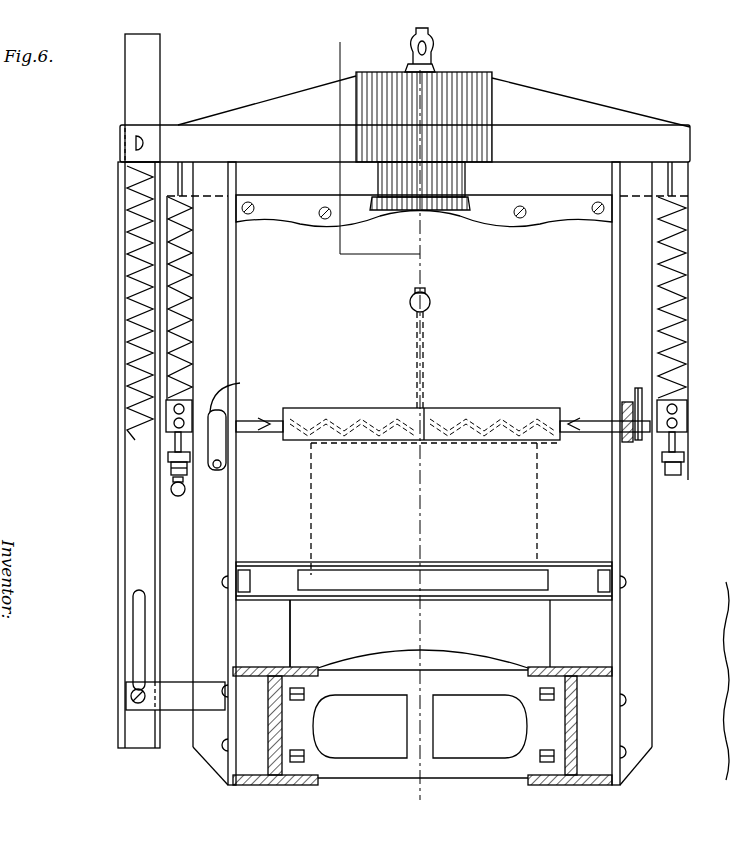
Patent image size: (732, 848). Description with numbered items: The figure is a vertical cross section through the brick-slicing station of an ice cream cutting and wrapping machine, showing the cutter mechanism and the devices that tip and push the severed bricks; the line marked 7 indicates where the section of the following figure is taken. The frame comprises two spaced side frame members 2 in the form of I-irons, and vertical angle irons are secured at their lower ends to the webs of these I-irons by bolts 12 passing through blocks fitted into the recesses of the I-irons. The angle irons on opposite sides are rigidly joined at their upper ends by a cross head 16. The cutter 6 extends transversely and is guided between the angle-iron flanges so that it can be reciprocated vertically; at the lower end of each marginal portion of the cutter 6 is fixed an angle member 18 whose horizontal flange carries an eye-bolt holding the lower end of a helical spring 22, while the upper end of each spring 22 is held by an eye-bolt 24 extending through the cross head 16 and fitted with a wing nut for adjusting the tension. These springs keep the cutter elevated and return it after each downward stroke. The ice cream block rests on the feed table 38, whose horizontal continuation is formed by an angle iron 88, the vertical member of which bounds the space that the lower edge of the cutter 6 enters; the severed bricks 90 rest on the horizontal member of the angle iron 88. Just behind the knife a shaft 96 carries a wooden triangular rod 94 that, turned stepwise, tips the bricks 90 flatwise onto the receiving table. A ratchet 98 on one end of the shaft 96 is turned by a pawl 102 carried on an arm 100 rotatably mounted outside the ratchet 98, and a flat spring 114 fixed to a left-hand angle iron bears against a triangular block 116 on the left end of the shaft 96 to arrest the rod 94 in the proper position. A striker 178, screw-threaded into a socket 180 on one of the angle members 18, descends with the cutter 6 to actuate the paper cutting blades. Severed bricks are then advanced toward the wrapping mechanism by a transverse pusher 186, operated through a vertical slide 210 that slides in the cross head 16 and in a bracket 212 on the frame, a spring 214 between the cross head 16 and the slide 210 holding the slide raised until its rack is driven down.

The side frame member 2 is at (253, 667).
The cutter 6 is at (484, 236).
The section line 7- 7 is at (340, 42).
The bolt 12 is at (220, 746).
The cross head 16 is at (562, 137).
The angle member 18 is at (171, 467).
The helical spring 22 is at (187, 300).
The eye-bolt 24 is at (181, 188).
The feed table 38 is at (300, 615).
The angle iron 88 is at (363, 562).
The severed brick 90 is at (524, 531).
The triangular rod 94 is at (490, 410).
The shaft 96 is at (583, 433).
The ratchet 98 is at (627, 445).
The arm 100 is at (640, 392).
The pawl 102 is at (630, 405).
The flat spring 114 is at (226, 450).
The triangular block 116 is at (242, 392).
The striker 178 is at (171, 488).
The screw-threaded socket 180 is at (168, 456).
The pusher 186 is at (498, 592).
The vertical slide 210 is at (133, 96).
The bracket 212 is at (165, 690).
The spring 214 is at (128, 252).